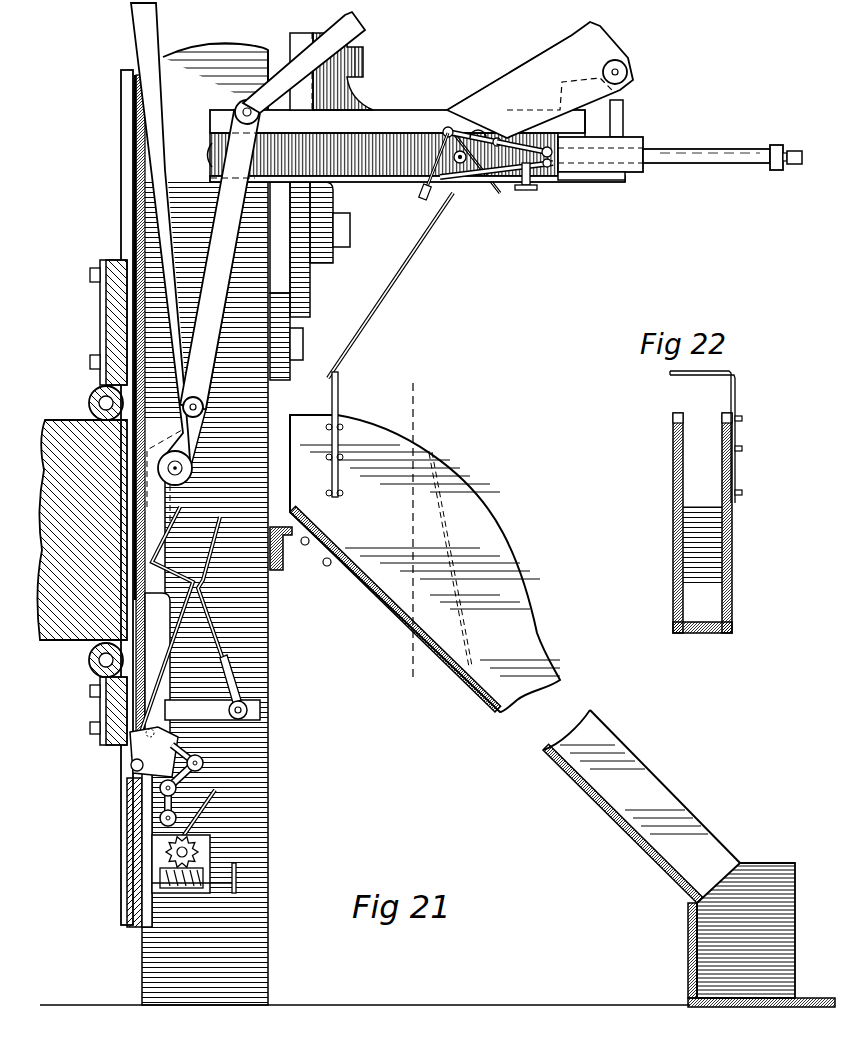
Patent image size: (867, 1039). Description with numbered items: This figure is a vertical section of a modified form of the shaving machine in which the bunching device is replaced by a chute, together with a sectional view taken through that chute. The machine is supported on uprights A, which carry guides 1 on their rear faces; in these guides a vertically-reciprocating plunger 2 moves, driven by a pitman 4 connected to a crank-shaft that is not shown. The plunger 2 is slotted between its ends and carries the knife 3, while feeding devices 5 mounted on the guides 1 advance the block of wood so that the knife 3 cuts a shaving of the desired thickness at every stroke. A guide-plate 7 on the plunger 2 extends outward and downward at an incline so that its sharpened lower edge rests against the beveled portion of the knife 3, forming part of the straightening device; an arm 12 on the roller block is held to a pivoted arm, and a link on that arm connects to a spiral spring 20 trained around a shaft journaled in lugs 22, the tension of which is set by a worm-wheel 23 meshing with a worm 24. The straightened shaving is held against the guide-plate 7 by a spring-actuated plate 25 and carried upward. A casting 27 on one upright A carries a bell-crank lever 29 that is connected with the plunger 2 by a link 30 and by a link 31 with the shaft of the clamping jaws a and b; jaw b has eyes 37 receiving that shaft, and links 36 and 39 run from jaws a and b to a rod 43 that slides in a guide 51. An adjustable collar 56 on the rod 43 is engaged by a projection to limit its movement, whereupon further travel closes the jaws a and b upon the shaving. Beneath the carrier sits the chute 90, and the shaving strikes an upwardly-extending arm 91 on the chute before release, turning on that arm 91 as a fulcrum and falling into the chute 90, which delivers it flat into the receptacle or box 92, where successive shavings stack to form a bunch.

In FIG. 21, the guides 1 is at (125, 208).
In FIG. 21, the plunger 2 is at (128, 877).
In FIG. 21, the knife 3 is at (120, 708).
In FIG. 21, the pitman 4 is at (152, 143).
In FIG. 21, the feeding devices 5 is at (89, 401).
In FIG. 21, the guide-plate 7 is at (180, 592).
In FIG. 21, the arm 12 is at (160, 758).
In FIG. 21, the spiral spring 20 is at (205, 810).
In FIG. 21, the lugs 22 is at (453, 383).
In FIG. 21, the worm-wheel 23 is at (200, 849).
In FIG. 21, the worm 24 is at (188, 890).
In FIG. 21, the spring-actuated plate 25 is at (222, 618).
In FIG. 21, the casting 27 is at (345, 103).
In FIG. 21, the bell-crank lever 29 is at (349, 34).
In FIG. 21, the link 30 is at (208, 305).
In FIG. 21, the link 31 is at (522, 108).
In FIG. 21, the link 36 is at (470, 183).
In FIG. 21, the eyes 37 is at (528, 189).
In FIG. 21, the link 39 is at (465, 130).
In FIG. 21, the rod 43 is at (688, 156).
In FIG. 21, the guide 51 is at (603, 168).
In FIG. 21, the adjustable collar 56 is at (775, 171).
In FIG. 21, the chute 90 is at (530, 582).
In FIG. 22, the chute 90 is at (685, 523).
In FIG. 21, the arm 91 is at (339, 392).
In FIG. 22, the arm 91 is at (738, 390).
In FIG. 21, the receptacle or box 92 is at (760, 878).
In FIG. 21, the jaw a is at (426, 174).
In FIG. 21, the jaw b is at (496, 188).
In FIG. 21, the uprights A is at (268, 862).